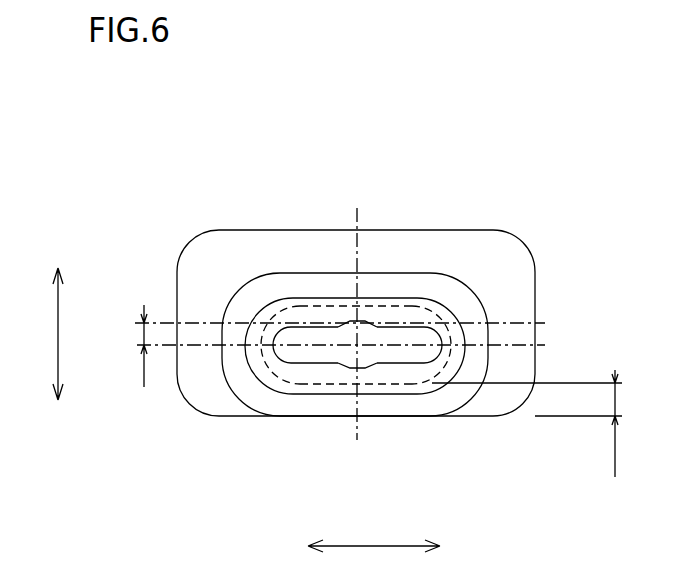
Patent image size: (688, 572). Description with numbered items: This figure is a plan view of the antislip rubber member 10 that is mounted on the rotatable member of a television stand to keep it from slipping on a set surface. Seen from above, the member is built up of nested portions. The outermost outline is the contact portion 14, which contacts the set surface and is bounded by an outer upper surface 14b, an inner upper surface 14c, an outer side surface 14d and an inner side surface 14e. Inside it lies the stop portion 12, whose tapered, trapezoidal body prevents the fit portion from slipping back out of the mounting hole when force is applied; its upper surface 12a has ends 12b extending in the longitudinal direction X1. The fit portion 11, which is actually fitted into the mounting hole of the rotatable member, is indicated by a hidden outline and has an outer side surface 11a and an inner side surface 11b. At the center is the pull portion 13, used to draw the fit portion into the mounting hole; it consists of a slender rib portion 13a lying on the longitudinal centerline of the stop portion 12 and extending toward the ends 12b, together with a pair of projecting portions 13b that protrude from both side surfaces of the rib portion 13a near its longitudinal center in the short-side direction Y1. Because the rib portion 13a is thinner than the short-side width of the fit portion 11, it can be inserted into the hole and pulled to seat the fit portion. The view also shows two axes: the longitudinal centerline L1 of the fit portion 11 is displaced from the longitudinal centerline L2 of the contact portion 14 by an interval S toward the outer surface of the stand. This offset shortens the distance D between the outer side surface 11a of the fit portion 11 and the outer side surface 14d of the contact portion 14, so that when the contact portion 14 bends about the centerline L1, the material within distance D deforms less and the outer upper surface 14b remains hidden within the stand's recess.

The antislip rubber member 10 is at (517, 205).
The fit portion 11 is at (458, 358).
The outer side surface 11a is at (393, 386).
The inner side surface 11b is at (295, 300).
The stop portion 12 is at (466, 299).
The upper surface 12a is at (424, 297).
The ends 12b is at (462, 324).
The pull portion 13 is at (350, 343).
The rib portion 13a is at (403, 333).
The projecting portions 13b is at (363, 320).
The contact portion 14 is at (480, 228).
The outer upper surface 14b is at (477, 410).
The inner upper surface 14c is at (403, 252).
The outer side surface 14d is at (460, 417).
The inner side surface 14e is at (326, 229).
The longitudinal centerline of the fit portion L1 is at (192, 345).
The longitudinal centerline of the contact portion L2 is at (200, 322).
The short-side direction Y1 is at (42, 334).
The longitudinal direction X1 is at (374, 532).
The interval S is at (132, 346).
The distance D is at (527, 423).